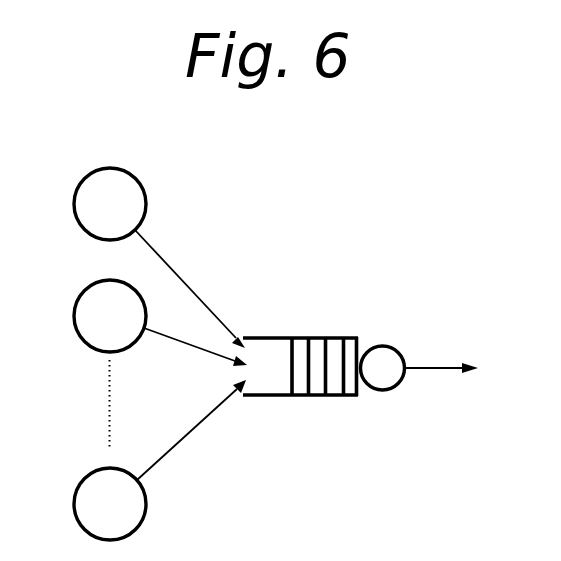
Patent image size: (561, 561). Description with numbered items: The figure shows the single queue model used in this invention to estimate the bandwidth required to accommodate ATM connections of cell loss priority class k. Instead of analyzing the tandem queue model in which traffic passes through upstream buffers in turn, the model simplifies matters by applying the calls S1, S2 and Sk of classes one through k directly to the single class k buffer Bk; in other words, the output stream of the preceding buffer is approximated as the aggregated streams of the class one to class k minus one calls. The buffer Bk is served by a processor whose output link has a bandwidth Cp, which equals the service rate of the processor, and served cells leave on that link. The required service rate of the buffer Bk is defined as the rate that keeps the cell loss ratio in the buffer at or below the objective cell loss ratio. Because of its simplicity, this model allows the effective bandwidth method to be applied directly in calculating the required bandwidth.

The class 1 call S1 is at (159, 258).
The class 2 call S2 is at (160, 323).
The class k call Sk is at (160, 460).
The class k buffer Bk is at (300, 341).
The bandwidth of output link Cp is at (420, 346).